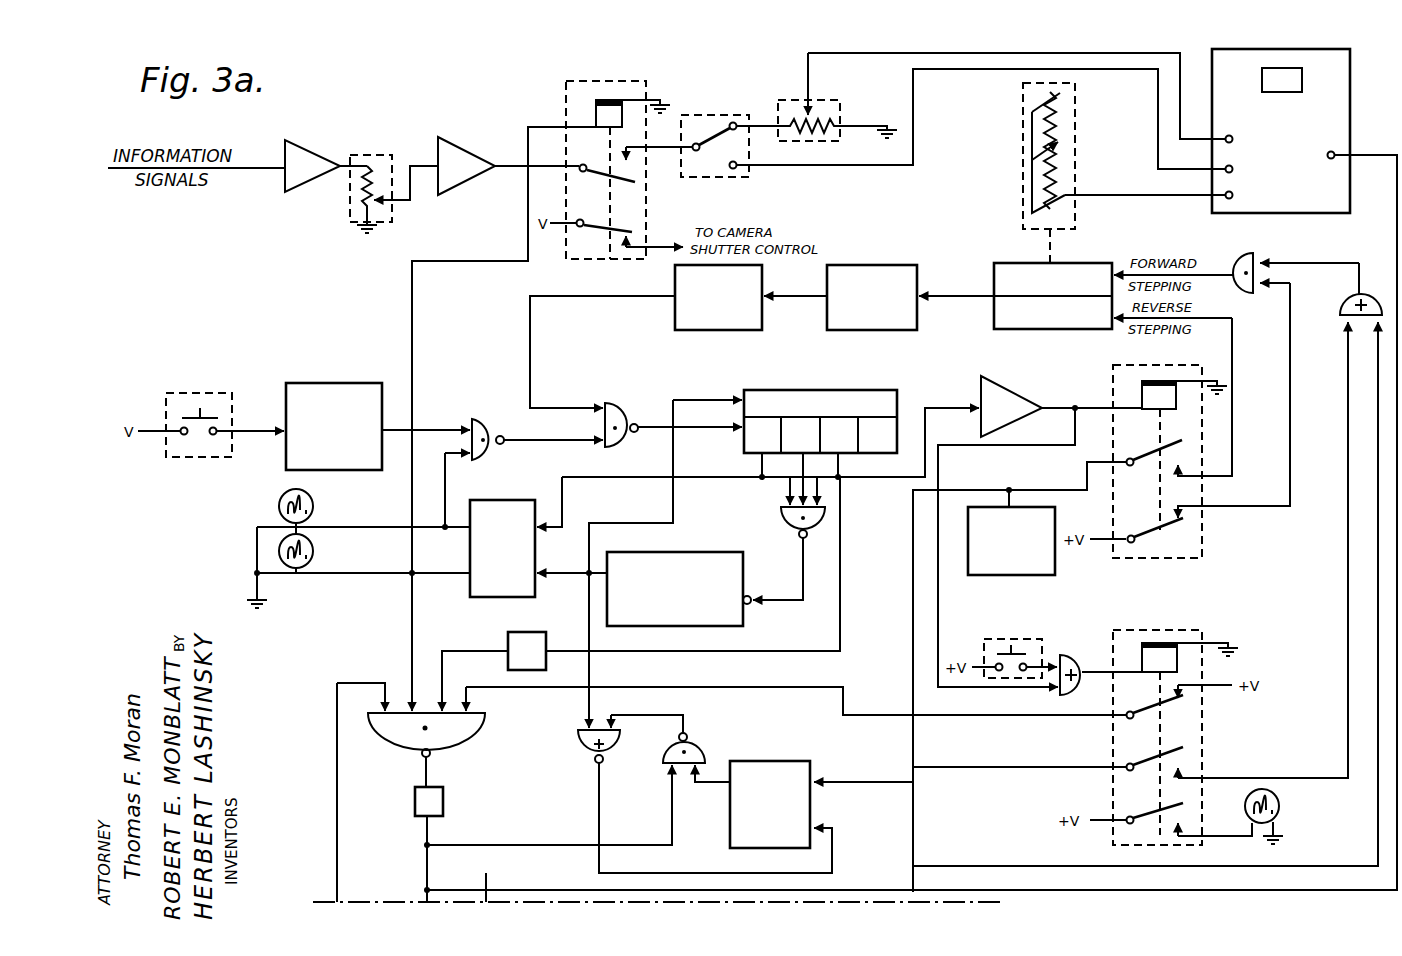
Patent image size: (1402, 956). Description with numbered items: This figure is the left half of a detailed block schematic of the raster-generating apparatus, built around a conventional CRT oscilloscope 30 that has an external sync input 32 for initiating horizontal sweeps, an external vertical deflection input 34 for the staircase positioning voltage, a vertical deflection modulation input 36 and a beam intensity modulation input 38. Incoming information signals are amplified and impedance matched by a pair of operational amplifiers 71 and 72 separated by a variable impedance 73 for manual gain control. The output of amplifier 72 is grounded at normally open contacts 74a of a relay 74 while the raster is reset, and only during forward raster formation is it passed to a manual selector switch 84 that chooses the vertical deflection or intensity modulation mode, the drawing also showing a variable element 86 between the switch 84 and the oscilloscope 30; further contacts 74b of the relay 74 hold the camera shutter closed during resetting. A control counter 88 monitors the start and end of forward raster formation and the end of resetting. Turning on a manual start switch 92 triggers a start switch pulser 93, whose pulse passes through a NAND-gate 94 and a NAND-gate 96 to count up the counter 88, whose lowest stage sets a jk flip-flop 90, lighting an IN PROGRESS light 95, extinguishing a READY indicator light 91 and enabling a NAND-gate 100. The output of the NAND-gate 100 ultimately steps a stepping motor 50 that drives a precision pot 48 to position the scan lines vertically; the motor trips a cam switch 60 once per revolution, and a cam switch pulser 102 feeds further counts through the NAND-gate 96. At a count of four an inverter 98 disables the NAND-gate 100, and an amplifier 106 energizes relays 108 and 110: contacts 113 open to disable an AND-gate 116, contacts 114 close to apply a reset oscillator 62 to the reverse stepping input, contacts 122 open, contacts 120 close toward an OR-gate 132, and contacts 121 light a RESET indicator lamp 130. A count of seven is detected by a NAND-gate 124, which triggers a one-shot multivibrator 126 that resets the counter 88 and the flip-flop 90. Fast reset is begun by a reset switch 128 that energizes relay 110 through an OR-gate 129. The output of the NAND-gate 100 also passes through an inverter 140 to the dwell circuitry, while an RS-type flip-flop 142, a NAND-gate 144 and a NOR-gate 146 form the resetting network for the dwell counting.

The CRT oscilloscope 30 is at (1350, 90).
The external sync input 32 is at (1330, 160).
The external vertical deflection input 34 is at (1240, 198).
The vertical deflection modulation input 36 is at (1231, 134).
The beam intensity modulation input 38 is at (1236, 160).
The precision pot 48 is at (1076, 156).
The stepping motor 50 is at (1080, 263).
The cam switch 60 is at (885, 265).
The reset oscillator 62 is at (1055, 572).
The operational amplifier 71 is at (302, 147).
The operational amplifier 72 is at (465, 146).
The variable impedance 73 is at (378, 156).
The relay 74 is at (605, 82).
The relay contacts 74a is at (638, 172).
The relay contacts 74b is at (636, 223).
The manual selector switch 84 is at (710, 115).
The potentiometer 86 is at (830, 104).
The control counter 88 is at (898, 398).
The jk flip-flop 90 is at (495, 500).
The READY indicator light 91 is at (279, 503).
The manual start switch 92 is at (188, 393).
The start switch pulser 93 is at (338, 383).
The NAND-gate 94 is at (479, 418).
The IN PROGRESS light 95 is at (279, 551).
The NAND-gate 96 is at (630, 406).
The inverter 98 is at (508, 632).
The NAND-gate 100 is at (458, 733).
The cam switch pulser 102 is at (720, 330).
The amplifier 106 is at (1004, 386).
The relay 108 is at (1113, 378).
The relay 110 is at (1183, 630).
The relay contacts 113 is at (1190, 529).
The relay contacts 114 is at (1190, 448).
The AND-gate 116 is at (1240, 253).
The relay contacts 120 is at (1190, 755).
The relay contacts 121 is at (1190, 822).
The relay contacts 122 is at (1190, 712).
The NAND-gate 124 is at (821, 534).
The one-shot multivibrator 126 is at (692, 552).
The reset switch 128 is at (1043, 641).
The OR-gate 129 is at (1075, 656).
The RESET indicator lamp 130 is at (1278, 796).
The OR-gate 132 is at (1362, 295).
The inverter 140 is at (445, 801).
The RS-type flip-flop 142 is at (775, 761).
The NAND-gate 144 is at (706, 750).
The NOR-gate 146 is at (582, 746).